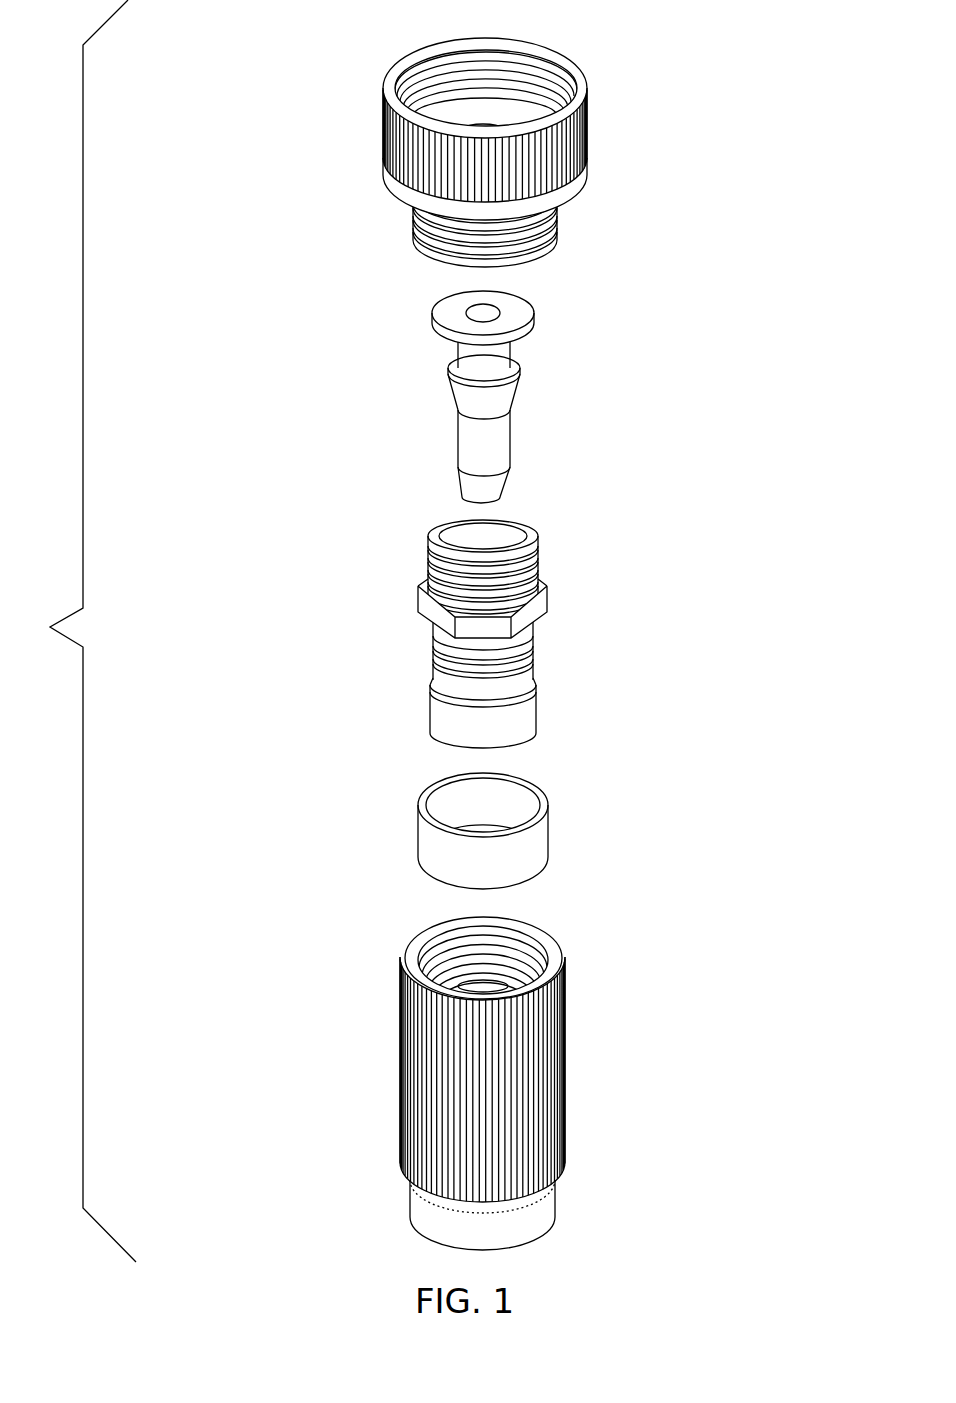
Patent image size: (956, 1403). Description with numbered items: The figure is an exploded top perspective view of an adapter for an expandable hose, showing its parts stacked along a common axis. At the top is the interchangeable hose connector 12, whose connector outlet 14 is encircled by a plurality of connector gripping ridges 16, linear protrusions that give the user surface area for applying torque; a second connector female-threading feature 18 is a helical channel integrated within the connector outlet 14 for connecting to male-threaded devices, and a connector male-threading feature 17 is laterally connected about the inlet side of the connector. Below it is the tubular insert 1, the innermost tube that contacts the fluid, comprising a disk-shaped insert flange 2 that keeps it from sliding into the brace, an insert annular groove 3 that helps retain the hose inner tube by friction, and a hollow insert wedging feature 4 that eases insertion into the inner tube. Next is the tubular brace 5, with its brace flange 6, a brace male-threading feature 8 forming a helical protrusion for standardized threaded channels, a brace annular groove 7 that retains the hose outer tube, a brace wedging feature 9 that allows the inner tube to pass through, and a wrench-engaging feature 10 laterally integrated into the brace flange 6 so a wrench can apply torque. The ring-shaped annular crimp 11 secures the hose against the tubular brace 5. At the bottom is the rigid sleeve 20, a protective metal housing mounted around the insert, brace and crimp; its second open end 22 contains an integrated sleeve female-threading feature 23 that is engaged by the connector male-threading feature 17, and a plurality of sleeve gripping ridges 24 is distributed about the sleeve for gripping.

The tubular insert 1 is at (375, 360).
The insert flange 2 is at (520, 311).
The insert annular groove 3 is at (490, 362).
The insert wedging feature 4 is at (497, 483).
The tubular brace 5 is at (401, 702).
The brace flange 6 is at (550, 575).
The brace annular groove 7 is at (520, 650).
The brace male-threading feature 8 is at (427, 573).
The brace wedging feature 9 is at (520, 727).
The wrench-engaging feature 10 is at (540, 605).
The annular crimp 11 is at (420, 802).
The interchangeable hose connector 12 is at (313, 110).
The connector outlet 14 is at (445, 54).
The plurality of connector gripping ridges 16 is at (560, 152).
The connector male-threading feature 17 is at (553, 231).
The second connector female-threading feature 18 is at (550, 68).
The rigid sleeve 20 is at (342, 1023).
The second open end 22 is at (427, 917).
The sleeve female-threading feature 23 is at (525, 940).
The plurality of sleeve gripping ridges 24 is at (555, 1100).